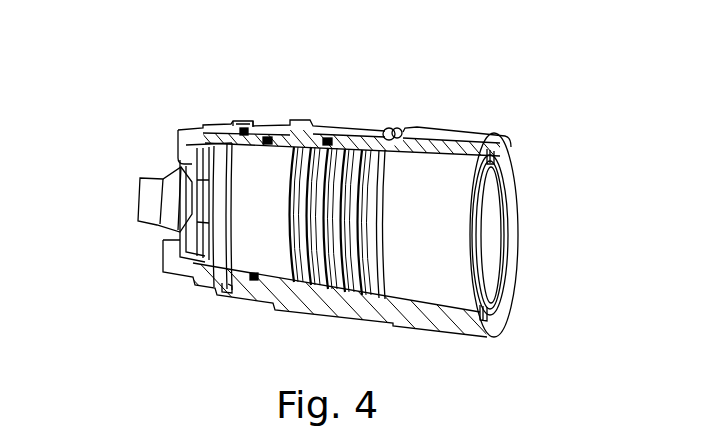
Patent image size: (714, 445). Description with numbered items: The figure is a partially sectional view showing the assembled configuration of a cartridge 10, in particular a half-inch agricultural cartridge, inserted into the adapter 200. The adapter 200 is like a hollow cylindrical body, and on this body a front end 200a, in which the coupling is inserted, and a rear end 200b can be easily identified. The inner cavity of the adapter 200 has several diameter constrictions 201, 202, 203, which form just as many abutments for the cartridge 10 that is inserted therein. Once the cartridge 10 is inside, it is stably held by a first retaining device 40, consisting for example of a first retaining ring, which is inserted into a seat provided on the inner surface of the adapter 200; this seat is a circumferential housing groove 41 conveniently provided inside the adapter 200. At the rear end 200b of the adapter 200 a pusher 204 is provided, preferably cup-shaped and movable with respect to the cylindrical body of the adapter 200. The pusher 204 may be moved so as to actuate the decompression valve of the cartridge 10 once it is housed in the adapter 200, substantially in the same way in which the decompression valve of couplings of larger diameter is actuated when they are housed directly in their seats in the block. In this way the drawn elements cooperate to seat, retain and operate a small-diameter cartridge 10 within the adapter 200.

The cartridge 10 is at (450, 227).
The first retaining device 40 is at (497, 137).
The circumferential groove 41 is at (481, 337).
The adapter 200 is at (472, 120).
The front end 200a is at (522, 206).
The rear end 200b is at (162, 136).
The diameter constriction 201 is at (402, 128).
The diameter constriction 202 is at (313, 126).
The diameter constriction 203 is at (238, 122).
The pusher 204 is at (153, 172).